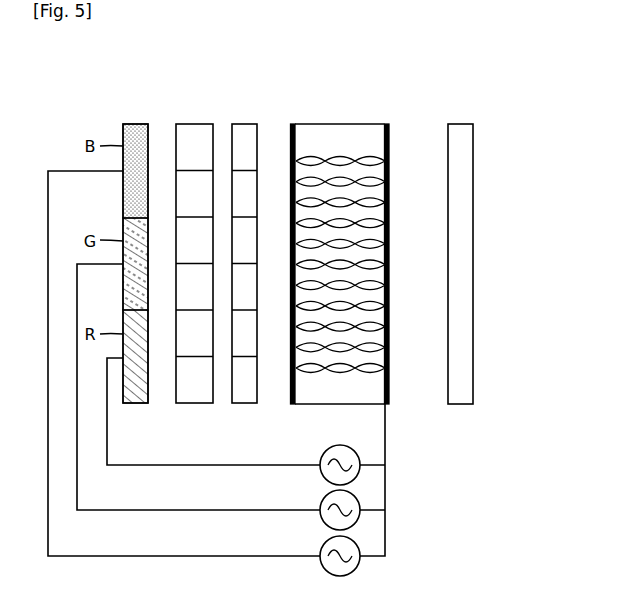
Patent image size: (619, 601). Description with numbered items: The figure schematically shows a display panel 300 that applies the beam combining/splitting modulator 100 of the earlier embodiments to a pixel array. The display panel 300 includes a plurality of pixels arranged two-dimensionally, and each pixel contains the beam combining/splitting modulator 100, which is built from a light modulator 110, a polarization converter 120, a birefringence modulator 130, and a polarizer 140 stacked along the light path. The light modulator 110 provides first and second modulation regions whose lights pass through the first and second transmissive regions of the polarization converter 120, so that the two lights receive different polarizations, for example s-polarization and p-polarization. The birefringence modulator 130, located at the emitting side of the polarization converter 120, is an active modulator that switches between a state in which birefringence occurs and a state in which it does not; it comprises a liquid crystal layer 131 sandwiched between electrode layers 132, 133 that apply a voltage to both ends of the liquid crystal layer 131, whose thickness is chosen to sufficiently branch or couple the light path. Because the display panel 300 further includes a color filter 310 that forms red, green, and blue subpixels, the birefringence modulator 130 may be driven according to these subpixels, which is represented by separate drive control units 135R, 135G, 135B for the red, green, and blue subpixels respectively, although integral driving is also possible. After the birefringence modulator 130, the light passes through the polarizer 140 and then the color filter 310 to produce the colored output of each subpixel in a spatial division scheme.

The beam combining/splitting modulator 100 is at (198, 67).
The light modulator 110 is at (196, 123).
The polarization converter 120 is at (248, 123).
The birefringence modulator 130 is at (343, 123).
The liquid crystal layer 131 is at (367, 398).
The electrode layer 132 is at (291, 405).
The electrode layer 133 is at (388, 406).
The drive control unit for blue subpixel 135B is at (355, 478).
The drive control unit for green subpixel 135G is at (355, 524).
The drive control unit for red subpixel 135R is at (355, 570).
The polarizer 140 is at (461, 124).
The display panel 300 is at (504, 106).
The color filter 310 is at (136, 123).